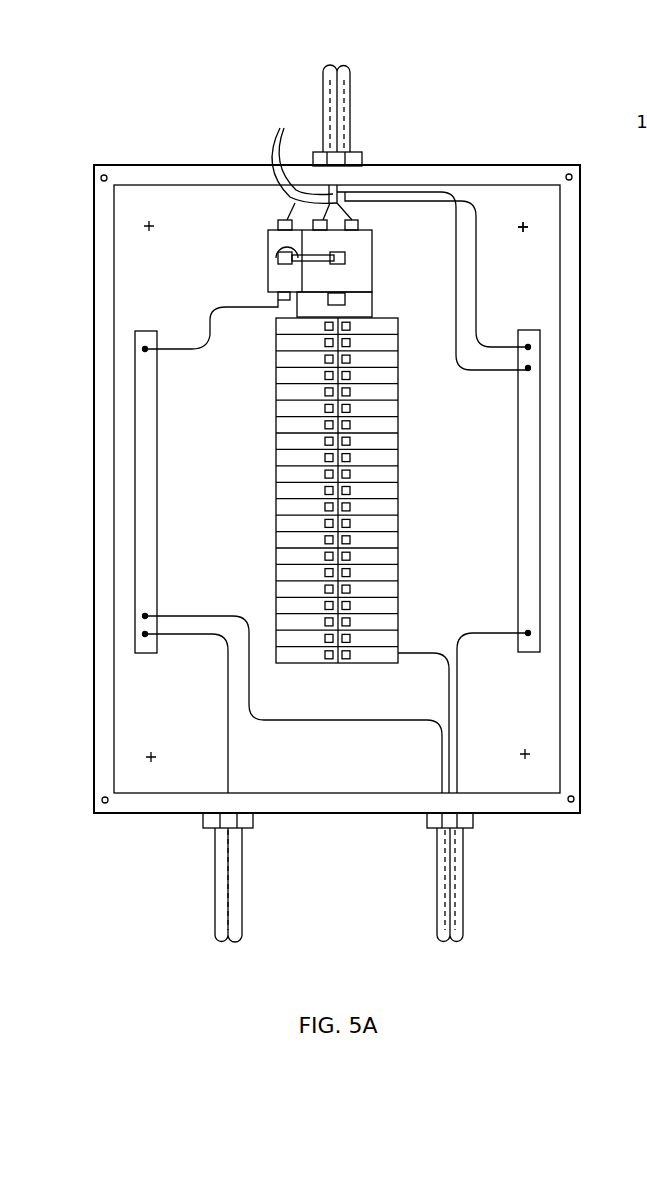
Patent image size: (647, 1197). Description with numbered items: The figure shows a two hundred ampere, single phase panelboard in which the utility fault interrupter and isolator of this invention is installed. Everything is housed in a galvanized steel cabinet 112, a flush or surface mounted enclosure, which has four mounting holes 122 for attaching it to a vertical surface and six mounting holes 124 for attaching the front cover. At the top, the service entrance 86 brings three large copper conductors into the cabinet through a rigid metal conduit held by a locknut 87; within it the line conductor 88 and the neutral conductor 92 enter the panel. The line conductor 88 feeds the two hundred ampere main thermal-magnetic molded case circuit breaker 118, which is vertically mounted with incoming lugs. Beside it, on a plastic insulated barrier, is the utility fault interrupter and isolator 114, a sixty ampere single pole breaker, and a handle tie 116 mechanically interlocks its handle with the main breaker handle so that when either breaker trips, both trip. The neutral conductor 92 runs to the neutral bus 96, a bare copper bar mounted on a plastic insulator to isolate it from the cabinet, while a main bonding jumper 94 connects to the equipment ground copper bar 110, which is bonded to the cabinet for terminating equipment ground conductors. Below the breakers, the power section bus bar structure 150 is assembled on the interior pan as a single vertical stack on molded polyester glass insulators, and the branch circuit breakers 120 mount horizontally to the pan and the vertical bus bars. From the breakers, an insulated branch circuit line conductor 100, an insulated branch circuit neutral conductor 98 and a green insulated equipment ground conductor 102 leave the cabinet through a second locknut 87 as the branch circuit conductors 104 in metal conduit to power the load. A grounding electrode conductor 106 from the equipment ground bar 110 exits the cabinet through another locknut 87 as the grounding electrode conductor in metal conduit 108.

The service entrance 86 is at (345, 78).
The locknut 87 is at (362, 152).
The line conductor 88 is at (280, 128).
The neutral conductor 92 is at (487, 282).
The main bonding jumper 94 is at (215, 318).
The neutral bus 96 is at (542, 410).
The insulated branch circuit neutral conductor 98 is at (457, 712).
The insulated branch circuit line conductor 100 is at (417, 652).
The green insulated equipment ground conductor 102 is at (330, 723).
The branch circuit conductors in metal conduit 104 is at (463, 918).
The grounding electrode conductor 106 is at (228, 717).
The grounding electrode conductor in metal conduit 108 is at (223, 895).
The equipment ground copper bar 110 is at (135, 560).
The galvanized steel cabinet 112 is at (145, 407).
The utility fault interrupter and isolator 114 is at (270, 268).
The circuit breaker handle tie 116 is at (282, 245).
The main thermal-magnetic molded case circuit breaker 118 is at (372, 243).
The branch circuit breaker 120 is at (399, 377).
The cabinet mounting holes 122 is at (532, 222).
The front cover mounting holes 124 is at (100, 493).
The power section bus bar structure 150 is at (372, 297).